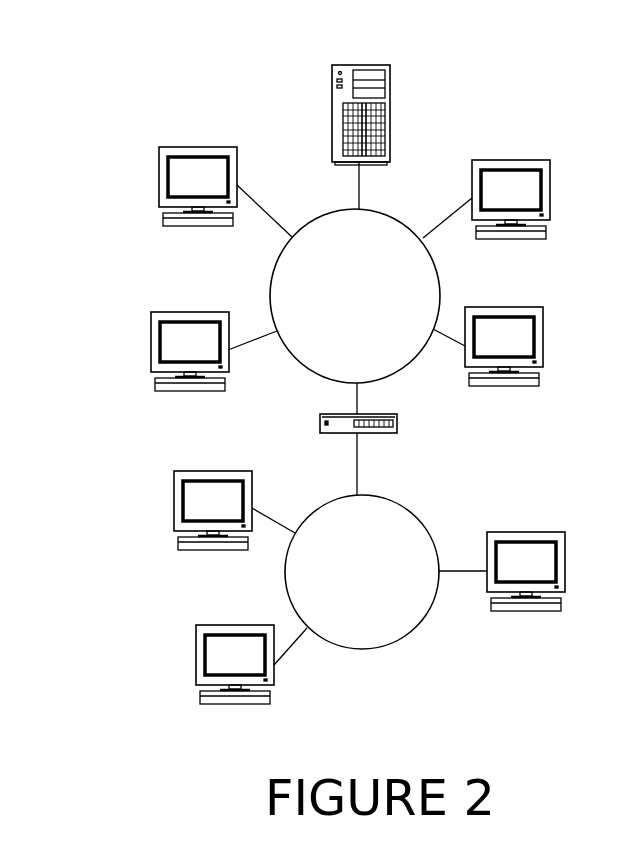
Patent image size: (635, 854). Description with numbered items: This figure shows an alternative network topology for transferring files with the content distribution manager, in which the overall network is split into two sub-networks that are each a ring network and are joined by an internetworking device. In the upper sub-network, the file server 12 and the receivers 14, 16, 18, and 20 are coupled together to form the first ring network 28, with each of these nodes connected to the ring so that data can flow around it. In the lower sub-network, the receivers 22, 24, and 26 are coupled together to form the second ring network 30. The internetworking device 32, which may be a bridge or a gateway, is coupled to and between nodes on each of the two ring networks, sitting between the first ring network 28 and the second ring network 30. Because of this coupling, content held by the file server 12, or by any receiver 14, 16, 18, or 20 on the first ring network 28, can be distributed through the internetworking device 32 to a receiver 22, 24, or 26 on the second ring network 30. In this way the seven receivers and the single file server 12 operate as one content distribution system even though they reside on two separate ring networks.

The file server 12 is at (360, 63).
The receiver 14 is at (198, 147).
The receiver 16 is at (190, 312).
The receiver 18 is at (543, 348).
The receiver 20 is at (550, 197).
The receiver 22 is at (174, 508).
The receiver 24 is at (196, 665).
The receiver 26 is at (565, 572).
The first ring network 28 is at (471, 99).
The second ring network 30 is at (484, 466).
The internetworking device 32 is at (320, 424).